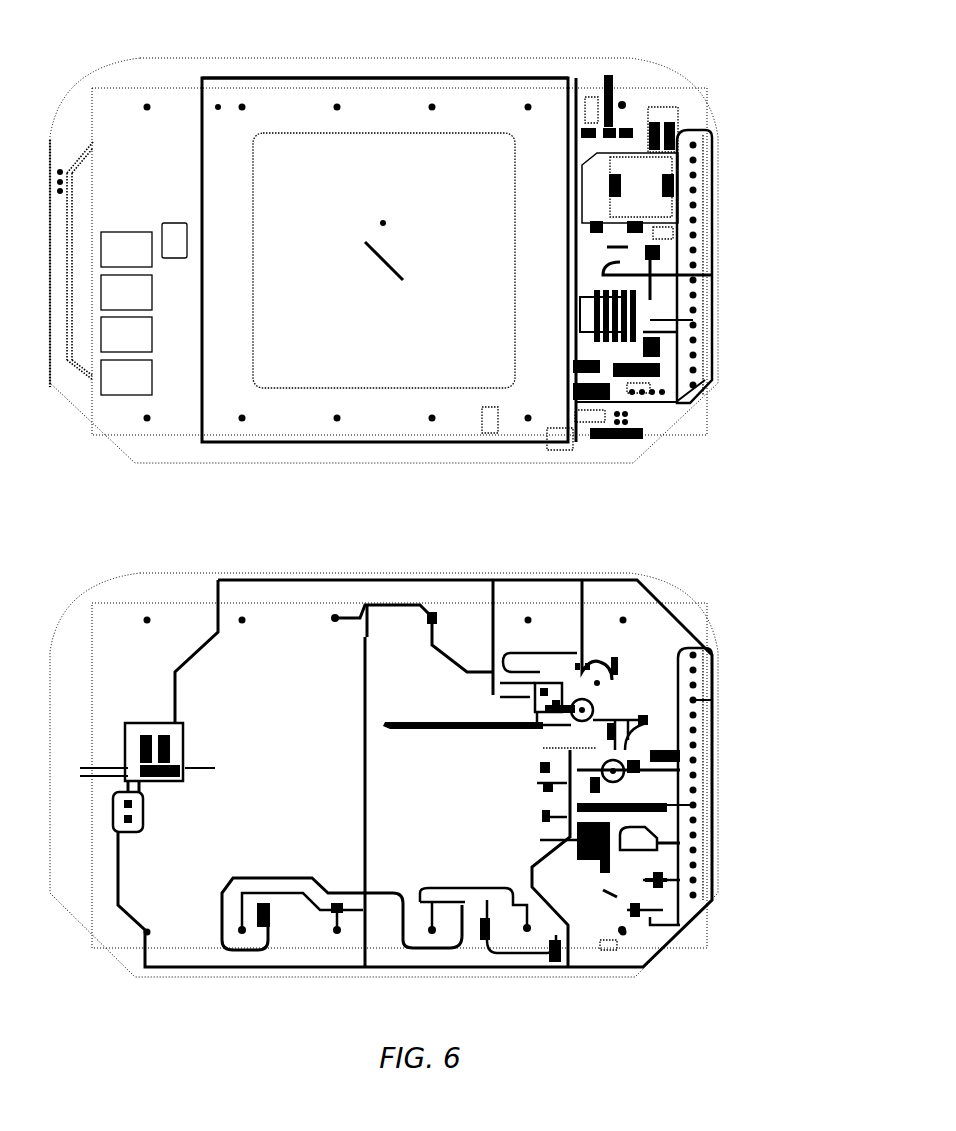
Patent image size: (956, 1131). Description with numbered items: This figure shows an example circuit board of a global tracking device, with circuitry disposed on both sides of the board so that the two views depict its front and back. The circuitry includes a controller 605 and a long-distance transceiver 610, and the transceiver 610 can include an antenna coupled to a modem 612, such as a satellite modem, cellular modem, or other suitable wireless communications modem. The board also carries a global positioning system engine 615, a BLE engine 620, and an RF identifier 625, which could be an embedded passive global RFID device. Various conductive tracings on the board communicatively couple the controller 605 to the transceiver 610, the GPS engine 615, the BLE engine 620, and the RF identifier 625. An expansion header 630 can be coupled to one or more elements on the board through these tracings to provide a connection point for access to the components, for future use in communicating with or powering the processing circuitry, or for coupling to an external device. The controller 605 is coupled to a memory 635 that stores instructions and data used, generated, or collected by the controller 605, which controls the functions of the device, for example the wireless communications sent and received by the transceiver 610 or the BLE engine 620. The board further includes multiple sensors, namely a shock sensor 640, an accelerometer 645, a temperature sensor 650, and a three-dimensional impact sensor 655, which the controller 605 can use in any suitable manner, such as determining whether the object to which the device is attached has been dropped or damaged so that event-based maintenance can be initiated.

The controller 605 is at (688, 733).
The long-distance transceiver 610 is at (384, 260).
The modem 612 is at (605, 245).
The global positioning system (GPS) engine 615 is at (510, 631).
The BLE engine 620 is at (131, 687).
The RF identifier 625 is at (174, 223).
The expansion header 630 is at (720, 217).
The memory 635 is at (691, 857).
The shock sensor 640 is at (126, 249).
The accelerometer 645 is at (126, 292).
The temperature sensor 650 is at (126, 334).
The three-dimensional (3D) impact sensor 655 is at (126, 377).